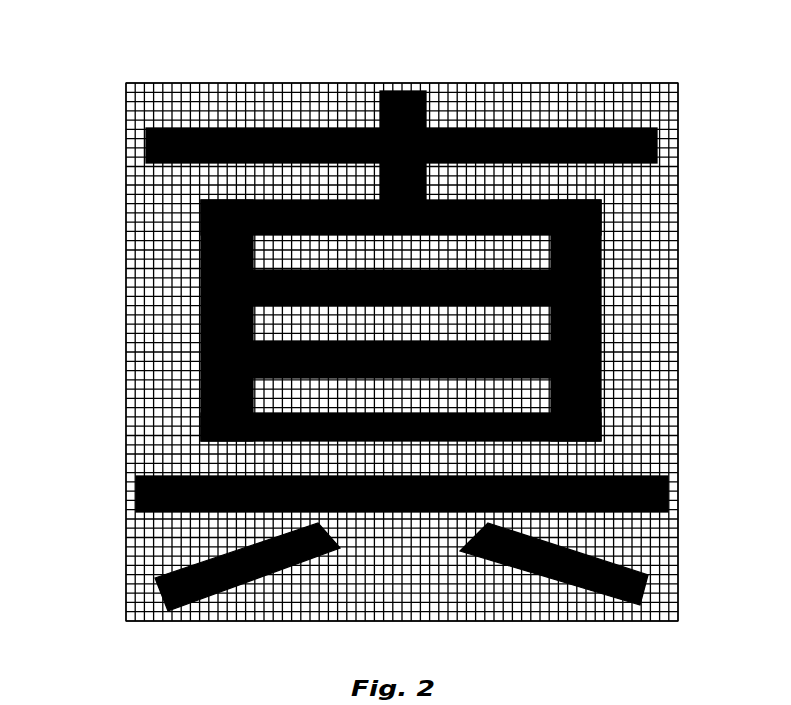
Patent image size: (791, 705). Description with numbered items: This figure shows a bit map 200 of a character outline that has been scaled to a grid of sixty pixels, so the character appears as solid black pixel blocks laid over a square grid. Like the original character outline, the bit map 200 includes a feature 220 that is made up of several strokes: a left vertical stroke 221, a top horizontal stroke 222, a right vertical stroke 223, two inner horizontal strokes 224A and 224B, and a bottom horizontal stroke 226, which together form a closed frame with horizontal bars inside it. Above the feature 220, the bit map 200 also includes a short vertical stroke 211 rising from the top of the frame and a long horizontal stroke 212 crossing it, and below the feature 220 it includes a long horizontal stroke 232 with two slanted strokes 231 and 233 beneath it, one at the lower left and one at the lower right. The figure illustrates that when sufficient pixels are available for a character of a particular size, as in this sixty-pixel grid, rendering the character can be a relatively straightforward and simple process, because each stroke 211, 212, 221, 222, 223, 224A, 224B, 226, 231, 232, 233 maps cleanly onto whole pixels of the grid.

The bit map 200 is at (602, 50).
The stroke 211 is at (392, 83).
The stroke 212 is at (655, 137).
The feature 220 is at (116, 368).
The stroke 221 is at (193, 268).
The stroke 222 is at (507, 190).
The stroke 223 is at (595, 267).
The stroke 224A is at (317, 298).
The stroke 224B is at (445, 333).
The stroke 226 is at (507, 435).
The stroke 231 is at (147, 582).
The stroke 232 is at (662, 488).
The stroke 233 is at (640, 582).